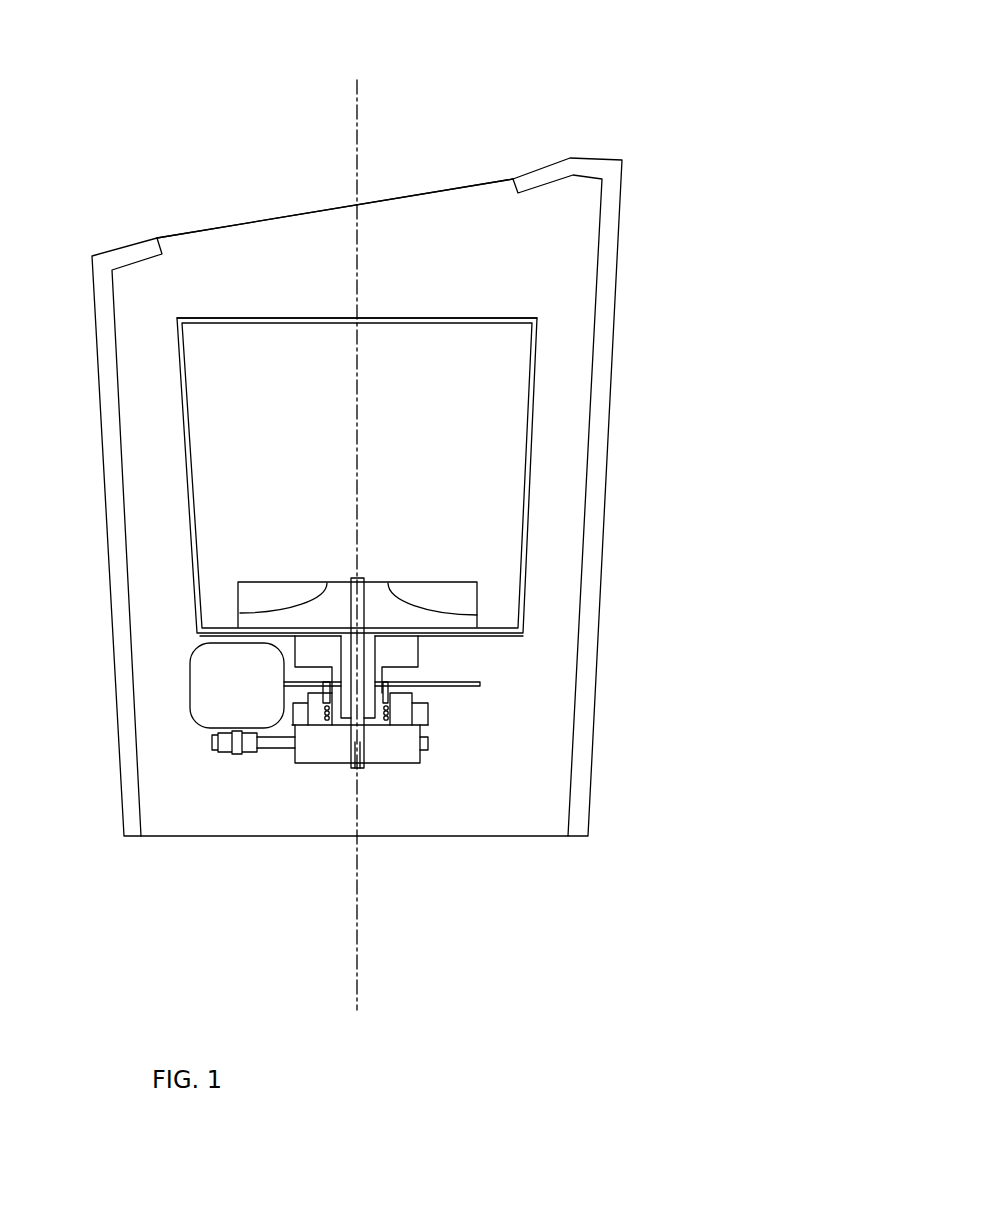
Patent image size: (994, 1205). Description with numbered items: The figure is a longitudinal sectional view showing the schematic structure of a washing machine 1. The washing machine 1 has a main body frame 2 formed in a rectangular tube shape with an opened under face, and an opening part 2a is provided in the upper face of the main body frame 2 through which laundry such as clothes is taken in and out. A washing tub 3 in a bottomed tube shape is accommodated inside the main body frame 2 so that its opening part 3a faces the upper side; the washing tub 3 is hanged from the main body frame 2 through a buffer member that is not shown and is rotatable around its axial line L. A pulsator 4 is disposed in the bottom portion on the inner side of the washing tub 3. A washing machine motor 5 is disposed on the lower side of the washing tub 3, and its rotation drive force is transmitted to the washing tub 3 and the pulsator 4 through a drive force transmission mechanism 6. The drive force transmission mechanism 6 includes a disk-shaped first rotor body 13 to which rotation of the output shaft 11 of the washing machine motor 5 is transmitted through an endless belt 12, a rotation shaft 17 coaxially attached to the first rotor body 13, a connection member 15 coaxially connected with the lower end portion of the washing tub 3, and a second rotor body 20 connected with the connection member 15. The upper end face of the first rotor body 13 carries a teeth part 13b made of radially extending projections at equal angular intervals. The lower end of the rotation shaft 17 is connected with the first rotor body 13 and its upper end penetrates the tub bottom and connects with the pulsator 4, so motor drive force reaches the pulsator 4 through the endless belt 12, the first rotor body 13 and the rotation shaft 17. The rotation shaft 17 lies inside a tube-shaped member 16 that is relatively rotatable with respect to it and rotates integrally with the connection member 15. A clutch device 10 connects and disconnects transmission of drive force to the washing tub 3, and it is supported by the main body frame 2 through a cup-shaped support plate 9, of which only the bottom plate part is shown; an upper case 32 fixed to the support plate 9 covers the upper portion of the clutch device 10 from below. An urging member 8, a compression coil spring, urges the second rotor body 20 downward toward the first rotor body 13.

The washing machine 1 is at (596, 98).
The main body frame 2 is at (616, 172).
The opening part 2a is at (462, 183).
The washing tub 3 is at (537, 385).
The opening part 3a is at (497, 318).
The pulsator 4 is at (458, 590).
The washing machine motor 5 is at (208, 690).
The drive force transmission mechanism 6 is at (296, 768).
The urging member 8 is at (385, 722).
The support plate 9 is at (480, 683).
The clutch device 10 is at (439, 727).
The output shaft 11 is at (237, 752).
The endless belt 12 is at (275, 748).
The first rotor body 13 is at (330, 763).
The teeth part 13b is at (428, 745).
The connection member 15 is at (405, 655).
The tube-shaped member 16 is at (365, 723).
The rotation shaft 17 is at (359, 768).
The second rotor body 20 is at (405, 705).
The upper case 32 is at (398, 690).
The axial line L is at (358, 125).